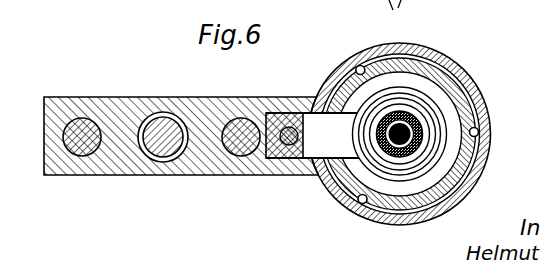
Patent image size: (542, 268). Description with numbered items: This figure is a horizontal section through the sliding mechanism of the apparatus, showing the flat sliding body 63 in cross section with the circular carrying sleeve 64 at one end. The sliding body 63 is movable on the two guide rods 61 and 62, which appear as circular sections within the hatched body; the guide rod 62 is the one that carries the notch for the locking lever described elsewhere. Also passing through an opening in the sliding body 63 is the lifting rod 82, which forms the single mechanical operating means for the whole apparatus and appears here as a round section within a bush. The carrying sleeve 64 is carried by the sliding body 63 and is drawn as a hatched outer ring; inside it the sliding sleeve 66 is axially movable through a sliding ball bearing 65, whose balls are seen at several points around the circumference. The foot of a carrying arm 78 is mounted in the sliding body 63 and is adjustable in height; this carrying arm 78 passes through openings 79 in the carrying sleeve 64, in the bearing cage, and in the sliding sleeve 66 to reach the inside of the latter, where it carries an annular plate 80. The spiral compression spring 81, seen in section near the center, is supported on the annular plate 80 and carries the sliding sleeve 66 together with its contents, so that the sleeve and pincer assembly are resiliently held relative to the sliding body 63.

The guide rod 61 is at (77, 118).
The guide rod 62 is at (233, 122).
The sliding body 63 is at (118, 103).
The carrying sleeve 64 is at (447, 67).
The sliding ball bearing 65 is at (479, 129).
The sliding sleeve 66 is at (357, 66).
The carrying arm 78 is at (282, 158).
The opening 79 is at (312, 97).
The annular plate 80 is at (357, 196).
The spiral compression spring 81 is at (406, 172).
The lifting rod 82 is at (153, 147).